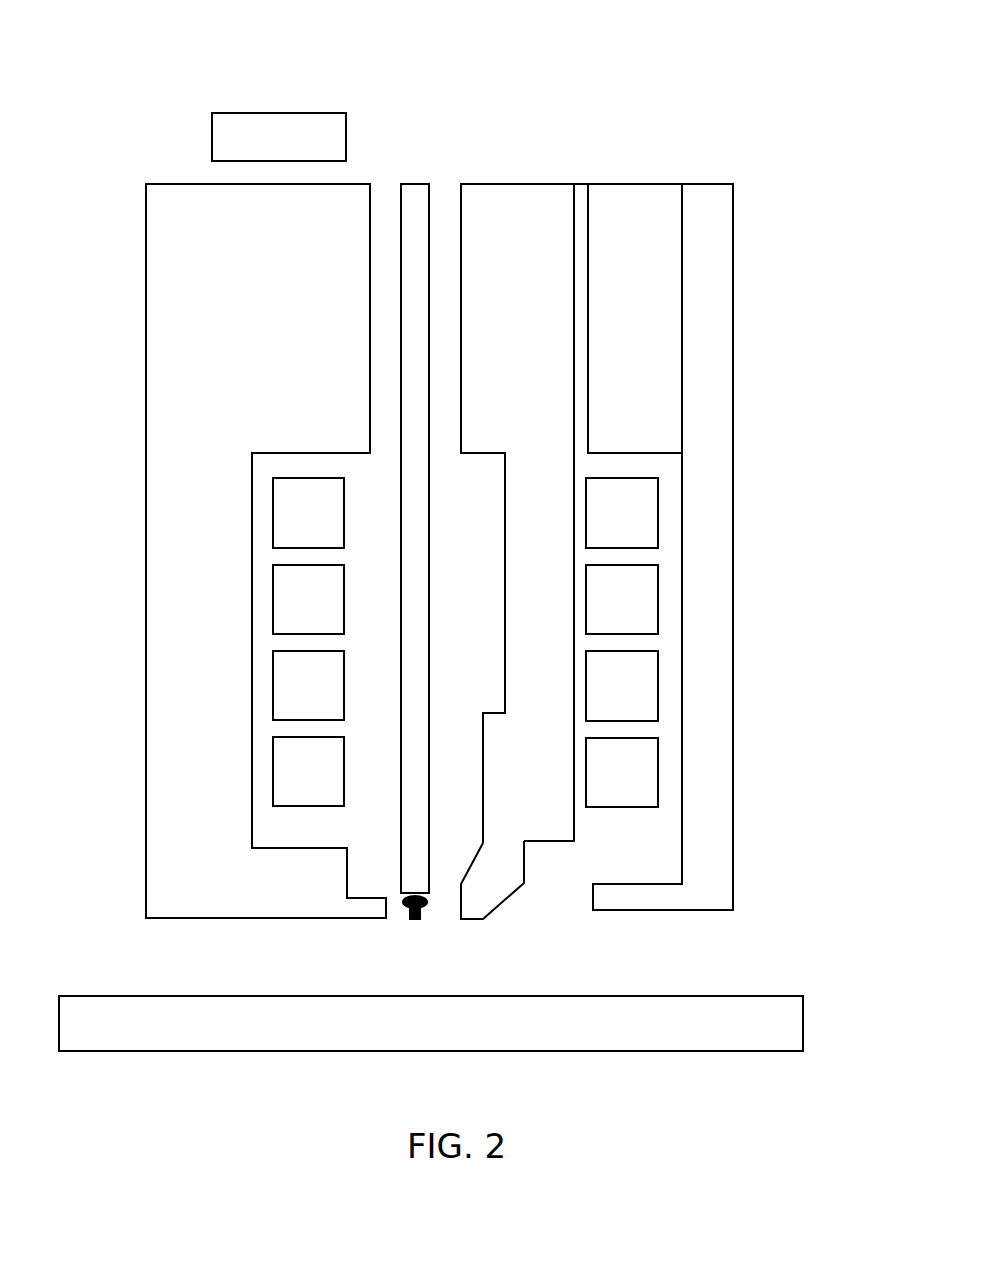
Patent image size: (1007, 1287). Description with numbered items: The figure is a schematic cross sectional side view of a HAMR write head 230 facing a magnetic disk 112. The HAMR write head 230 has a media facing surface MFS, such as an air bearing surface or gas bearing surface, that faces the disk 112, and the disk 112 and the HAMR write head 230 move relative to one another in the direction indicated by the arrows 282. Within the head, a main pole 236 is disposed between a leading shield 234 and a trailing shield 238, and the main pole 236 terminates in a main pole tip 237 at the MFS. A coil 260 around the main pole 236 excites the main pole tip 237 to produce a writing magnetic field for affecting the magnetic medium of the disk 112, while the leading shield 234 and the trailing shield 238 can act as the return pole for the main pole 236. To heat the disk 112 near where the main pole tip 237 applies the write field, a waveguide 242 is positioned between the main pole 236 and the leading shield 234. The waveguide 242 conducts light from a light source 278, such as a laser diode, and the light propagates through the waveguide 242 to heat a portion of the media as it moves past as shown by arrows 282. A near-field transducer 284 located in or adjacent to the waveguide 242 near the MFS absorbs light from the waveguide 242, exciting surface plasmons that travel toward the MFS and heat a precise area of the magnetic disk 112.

The HAMR write head 230 is at (165, 64).
The light source 278 is at (412, 176).
The leading shield 234 is at (209, 611).
The waveguide 242 is at (417, 350).
The near-field transducer 284 is at (415, 920).
The main pole 236 is at (556, 611).
The main pole tip 237 is at (512, 886).
The trailing shield 238 is at (727, 611).
The coil 260 is at (328, 523).
The media facing surface MFS is at (693, 932).
The magnetic disk 112 is at (436, 1034).
The arrows 282 is at (837, 373).